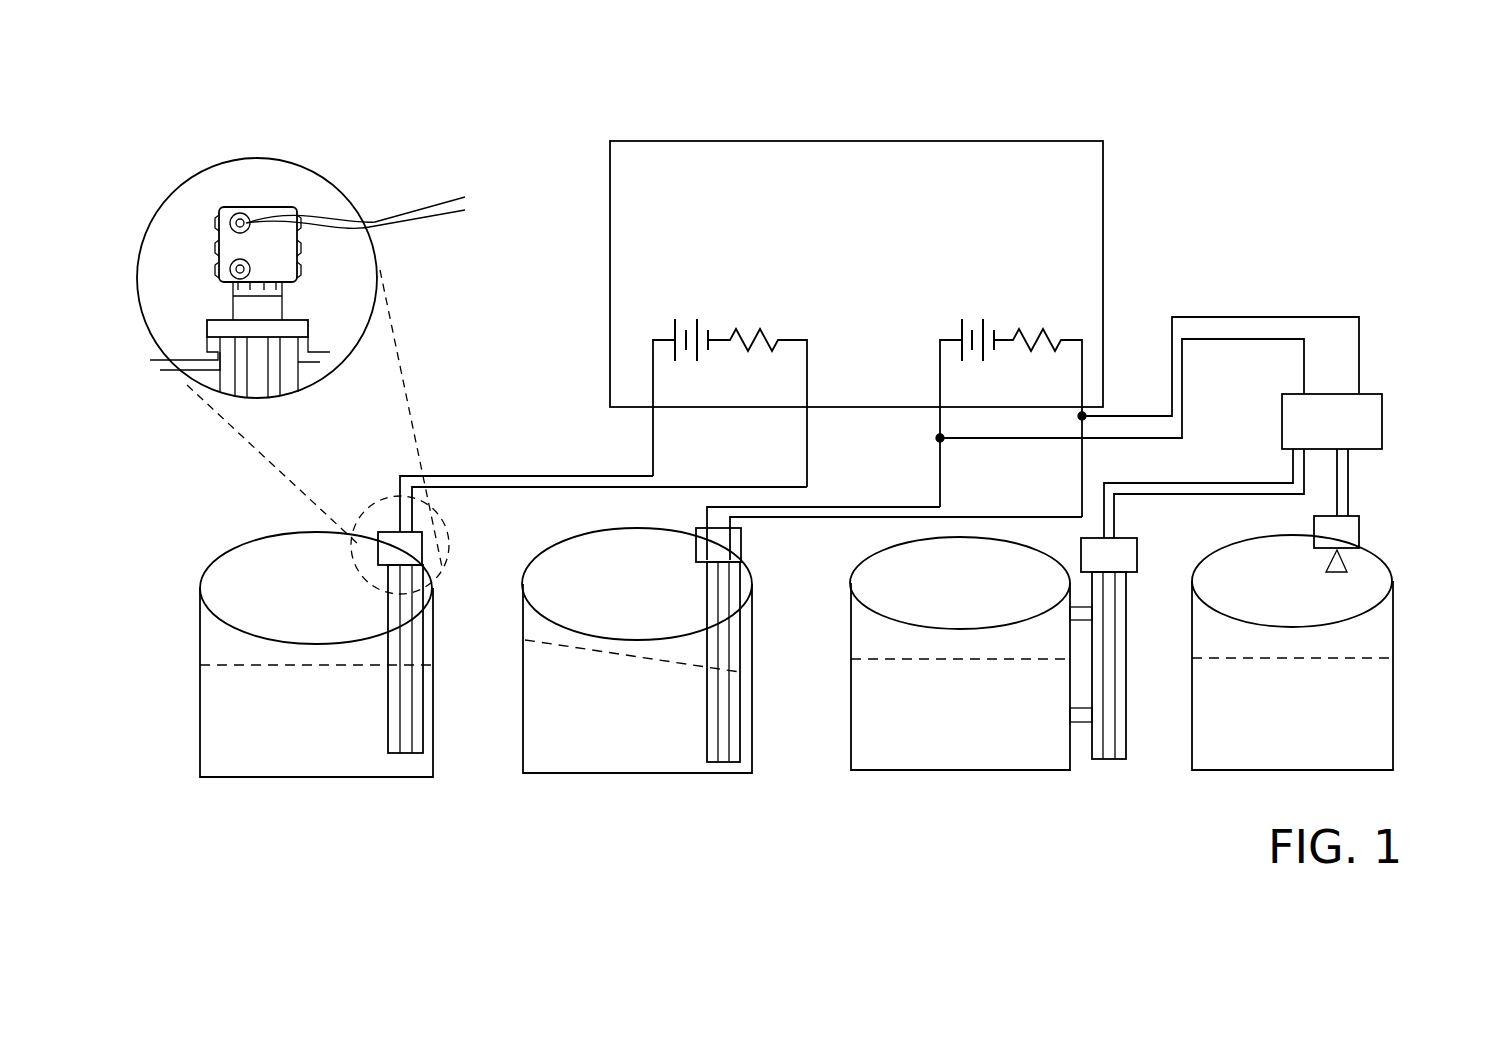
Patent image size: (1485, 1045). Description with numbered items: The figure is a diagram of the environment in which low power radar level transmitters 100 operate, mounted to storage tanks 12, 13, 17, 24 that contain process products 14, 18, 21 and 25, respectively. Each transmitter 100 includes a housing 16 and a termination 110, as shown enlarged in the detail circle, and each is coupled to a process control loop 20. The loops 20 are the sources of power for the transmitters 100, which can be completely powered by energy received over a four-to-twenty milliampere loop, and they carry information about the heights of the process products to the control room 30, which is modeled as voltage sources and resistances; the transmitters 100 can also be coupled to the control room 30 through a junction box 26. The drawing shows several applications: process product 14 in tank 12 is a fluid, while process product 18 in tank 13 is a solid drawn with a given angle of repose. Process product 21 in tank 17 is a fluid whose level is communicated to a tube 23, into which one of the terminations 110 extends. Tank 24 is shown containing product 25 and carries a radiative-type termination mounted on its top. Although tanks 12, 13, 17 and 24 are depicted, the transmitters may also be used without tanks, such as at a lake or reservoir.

The storage tank 12 is at (200, 612).
The storage tank 13 is at (752, 700).
The process product 14 is at (285, 714).
The housing 16 is at (277, 207).
The storage tank 17 is at (851, 750).
The process product 18 is at (605, 700).
The process control loop 20 is at (444, 474).
The process product 21 is at (935, 710).
The tube 23 is at (1126, 594).
The storage tank 24 is at (1393, 600).
The process product 25 is at (1277, 710).
The junction box 26 is at (1359, 340).
The control room 30 is at (803, 270).
The low power radar level transmitter 100 is at (330, 255).
The termination 110 is at (313, 346).